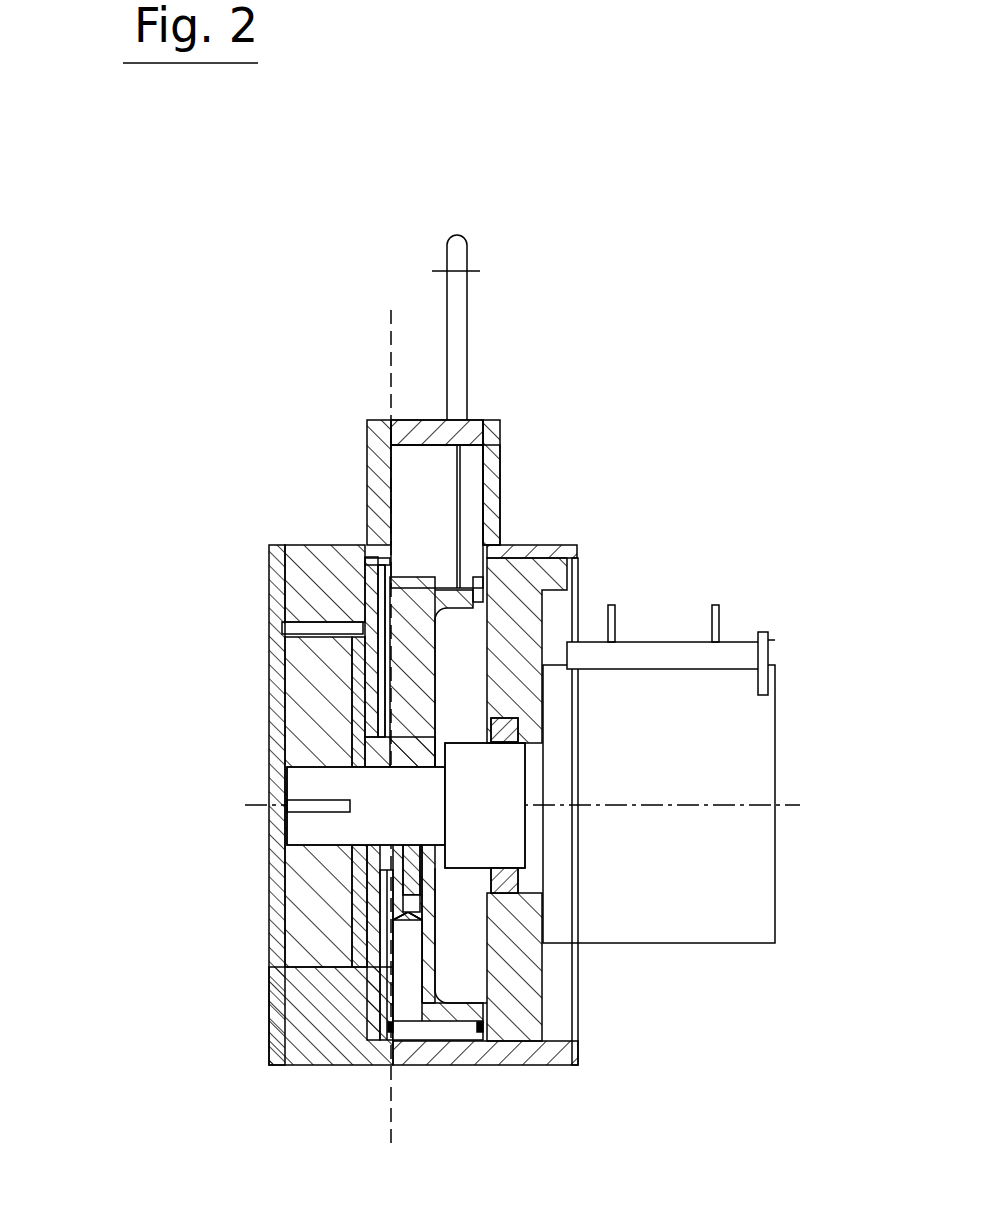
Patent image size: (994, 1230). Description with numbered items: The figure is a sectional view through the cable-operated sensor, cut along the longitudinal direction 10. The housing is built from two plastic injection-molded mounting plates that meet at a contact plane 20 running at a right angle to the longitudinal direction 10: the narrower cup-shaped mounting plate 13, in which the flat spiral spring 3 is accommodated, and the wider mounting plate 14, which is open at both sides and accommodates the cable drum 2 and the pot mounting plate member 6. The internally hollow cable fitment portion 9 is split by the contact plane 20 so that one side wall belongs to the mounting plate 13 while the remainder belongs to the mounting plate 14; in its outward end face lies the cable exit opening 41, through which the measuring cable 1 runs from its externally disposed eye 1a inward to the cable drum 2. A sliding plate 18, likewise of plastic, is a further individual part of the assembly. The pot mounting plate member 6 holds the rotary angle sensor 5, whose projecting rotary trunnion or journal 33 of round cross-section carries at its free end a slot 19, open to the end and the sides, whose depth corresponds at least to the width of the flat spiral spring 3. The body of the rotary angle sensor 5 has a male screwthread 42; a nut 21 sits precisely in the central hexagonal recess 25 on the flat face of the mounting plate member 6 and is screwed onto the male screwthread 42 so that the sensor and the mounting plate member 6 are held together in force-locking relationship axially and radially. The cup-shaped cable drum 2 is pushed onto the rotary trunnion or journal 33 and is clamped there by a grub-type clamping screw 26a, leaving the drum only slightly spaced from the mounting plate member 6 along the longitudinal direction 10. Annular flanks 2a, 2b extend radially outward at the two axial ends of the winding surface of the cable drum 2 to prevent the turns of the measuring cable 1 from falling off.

The measuring cable 1 is at (675, 547).
The eye 1a is at (663, 327).
The cable drum 2 is at (590, 801).
The flank 2a is at (273, 973).
The flank 2b is at (686, 1015).
The flat spiral spring 3 is at (207, 750).
The rotary angle sensor 5 is at (718, 774).
The pot mounting plate member 6 is at (664, 793).
The cable fitment portion 9 is at (281, 451).
The longitudinal direction 10 is at (320, 805).
The cup-shaped mounting plate 13 is at (214, 510).
The mounting plate 14 is at (688, 469).
The sliding plate 18 is at (228, 750).
The slot 19 is at (206, 747).
The contact plane 20 is at (228, 693).
The nut 21 is at (692, 917).
The hexagonal recess 25 is at (692, 691).
The clamping screw 26a is at (273, 799).
The rotary trunnion or journal 33 is at (215, 788).
The cable exit opening 41 is at (642, 452).
The male screwthread 42 is at (669, 822).